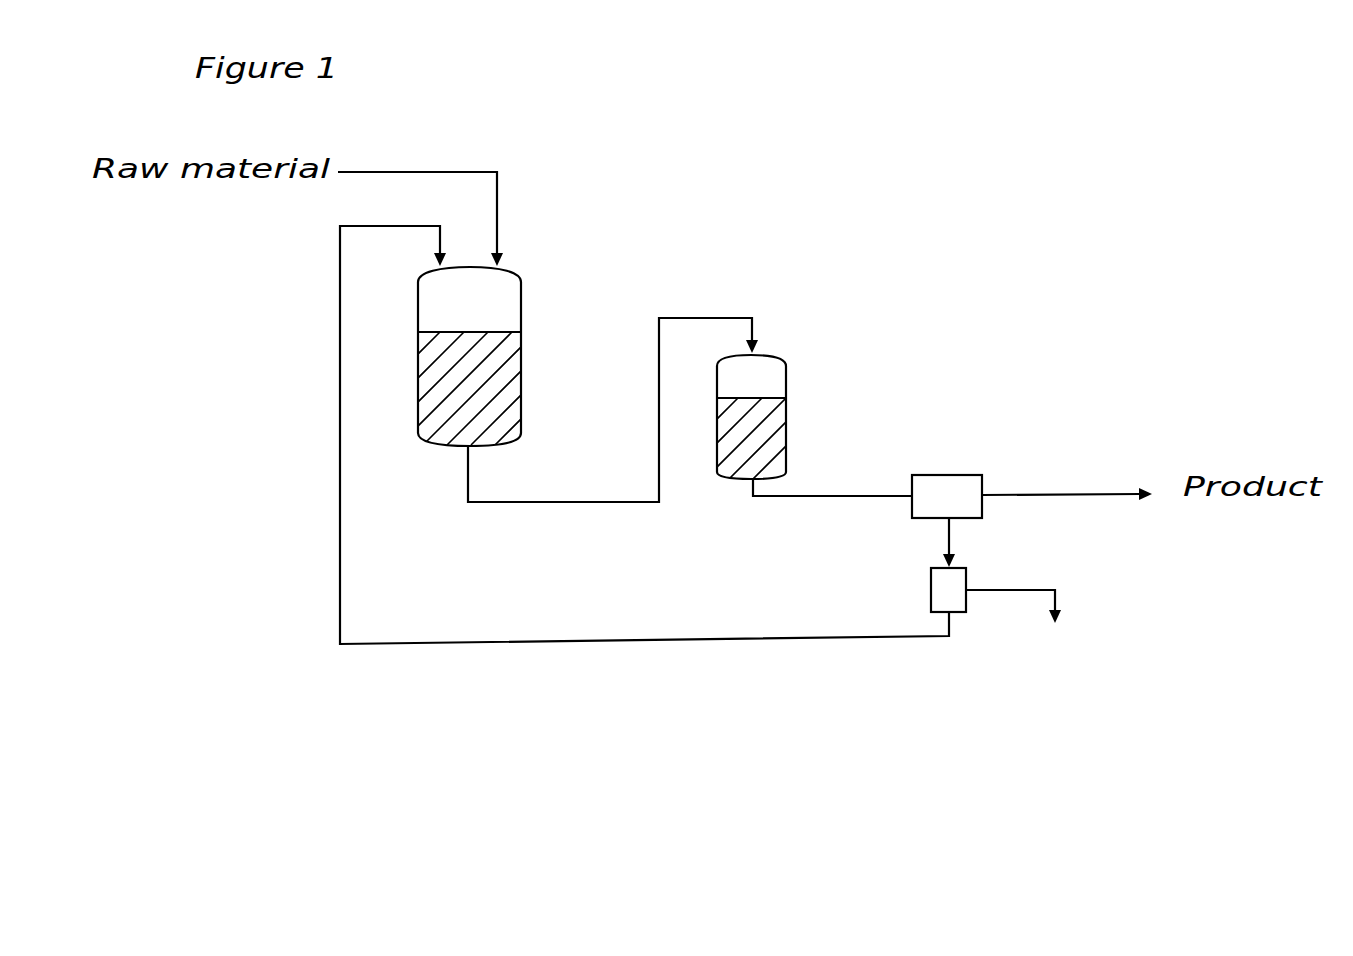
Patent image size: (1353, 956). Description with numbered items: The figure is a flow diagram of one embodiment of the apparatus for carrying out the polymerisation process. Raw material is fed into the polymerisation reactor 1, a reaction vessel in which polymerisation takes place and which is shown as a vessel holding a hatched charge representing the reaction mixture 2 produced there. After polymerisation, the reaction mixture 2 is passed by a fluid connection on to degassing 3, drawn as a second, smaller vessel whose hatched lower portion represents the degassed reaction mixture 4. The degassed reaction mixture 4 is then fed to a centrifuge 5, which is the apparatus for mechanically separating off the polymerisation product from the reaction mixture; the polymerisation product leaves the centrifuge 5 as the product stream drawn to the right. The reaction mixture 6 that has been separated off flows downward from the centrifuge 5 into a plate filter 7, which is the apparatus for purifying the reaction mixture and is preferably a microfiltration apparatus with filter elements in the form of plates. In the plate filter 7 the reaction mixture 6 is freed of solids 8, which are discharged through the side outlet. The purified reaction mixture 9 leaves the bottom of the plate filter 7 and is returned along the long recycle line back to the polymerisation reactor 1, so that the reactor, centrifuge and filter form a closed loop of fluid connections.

The polymerisation reactor 1 is at (417, 322).
The reaction mixture 2 is at (467, 388).
The degassing 3 is at (786, 365).
The degassed reaction mixture 4 is at (745, 439).
The centrifuge 5 is at (952, 475).
The separated reaction mixture 6 is at (950, 538).
The plate filter 7 is at (929, 572).
The solids 8 is at (1018, 588).
The purified reaction mixture 9 is at (488, 642).